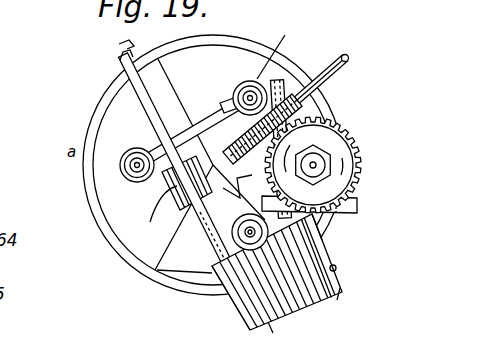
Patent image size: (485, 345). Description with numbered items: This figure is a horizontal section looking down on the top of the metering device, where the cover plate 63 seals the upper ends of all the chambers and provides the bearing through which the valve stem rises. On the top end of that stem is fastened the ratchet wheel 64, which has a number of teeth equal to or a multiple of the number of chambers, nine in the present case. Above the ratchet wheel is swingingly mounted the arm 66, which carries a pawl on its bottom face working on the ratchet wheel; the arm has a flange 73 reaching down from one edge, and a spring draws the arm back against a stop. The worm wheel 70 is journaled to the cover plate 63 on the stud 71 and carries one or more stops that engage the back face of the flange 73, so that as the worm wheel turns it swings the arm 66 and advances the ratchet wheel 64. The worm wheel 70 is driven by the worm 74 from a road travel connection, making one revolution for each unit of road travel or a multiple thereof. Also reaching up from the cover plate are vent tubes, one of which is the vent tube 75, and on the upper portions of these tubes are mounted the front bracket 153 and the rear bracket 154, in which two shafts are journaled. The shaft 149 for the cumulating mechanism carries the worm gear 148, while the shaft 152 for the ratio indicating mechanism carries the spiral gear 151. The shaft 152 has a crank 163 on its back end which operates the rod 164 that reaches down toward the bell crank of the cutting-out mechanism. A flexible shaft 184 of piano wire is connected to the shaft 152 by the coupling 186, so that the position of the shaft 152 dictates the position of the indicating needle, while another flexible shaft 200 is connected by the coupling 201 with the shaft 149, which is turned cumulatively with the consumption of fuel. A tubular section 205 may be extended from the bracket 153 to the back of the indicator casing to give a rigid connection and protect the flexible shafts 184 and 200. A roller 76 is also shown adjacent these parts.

The ratchet wheel 64 is at (183, 112).
The front bracket 153 is at (174, 274).
The spiral gear 151 is at (173, 199).
The cover plate 63 is at (185, 153).
The worm 74 is at (120, 163).
The shaft 152 is at (138, 107).
The crank 163 is at (121, 60).
The rod 164 is at (125, 48).
The vent tube 75 is at (284, 82).
The worm gear 148 is at (346, 58).
The rear bracket 154 is at (243, 86).
The shaft 149 is at (288, 51).
The arm 66 is at (357, 207).
The flange 73 is at (357, 209).
The worm wheel 70 is at (362, 156).
The stud 71 is at (318, 160).
The shaft 200 is at (338, 297).
The coupling 201 is at (325, 246).
The tubular section 205 is at (336, 268).
The shaft 184 is at (275, 329).
The coupling 186 is at (230, 302).
The roller 76 is at (212, 250).